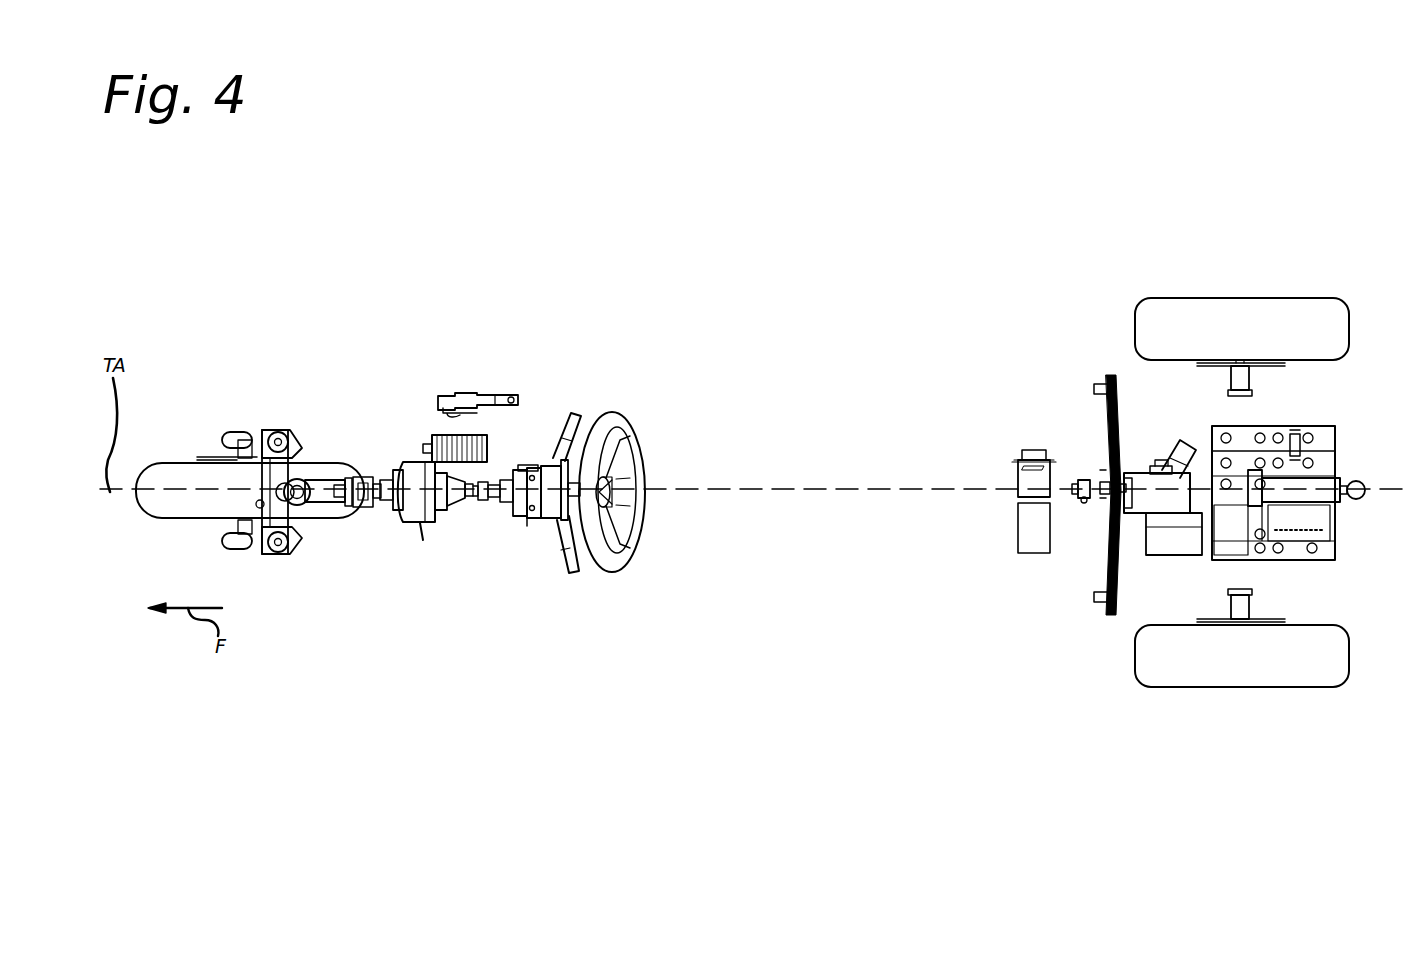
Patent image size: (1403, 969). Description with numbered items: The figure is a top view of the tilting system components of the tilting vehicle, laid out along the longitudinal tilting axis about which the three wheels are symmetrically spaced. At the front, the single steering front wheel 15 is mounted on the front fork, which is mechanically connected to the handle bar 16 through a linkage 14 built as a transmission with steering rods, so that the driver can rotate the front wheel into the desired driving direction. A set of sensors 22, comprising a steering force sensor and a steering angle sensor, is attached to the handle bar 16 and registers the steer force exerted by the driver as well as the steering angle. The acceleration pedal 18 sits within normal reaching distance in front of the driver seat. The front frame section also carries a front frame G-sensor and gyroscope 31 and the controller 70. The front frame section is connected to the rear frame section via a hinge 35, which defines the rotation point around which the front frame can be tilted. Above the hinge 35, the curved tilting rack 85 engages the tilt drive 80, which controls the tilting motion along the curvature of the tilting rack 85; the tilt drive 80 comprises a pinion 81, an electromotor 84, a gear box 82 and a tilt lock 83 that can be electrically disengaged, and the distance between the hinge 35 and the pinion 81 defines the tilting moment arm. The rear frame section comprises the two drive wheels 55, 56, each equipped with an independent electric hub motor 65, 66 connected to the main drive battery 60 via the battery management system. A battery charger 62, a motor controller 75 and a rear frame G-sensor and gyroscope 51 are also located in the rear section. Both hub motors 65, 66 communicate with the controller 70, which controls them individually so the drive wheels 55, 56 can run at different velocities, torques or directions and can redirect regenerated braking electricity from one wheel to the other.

The steering front wheel 15 is at (187, 477).
The linkage 14 is at (364, 481).
The set of sensors 22 is at (413, 480).
The acceleration pedal 18 is at (460, 435).
The handle bar 16 is at (498, 462).
The front frame G-sensor and gyroscope 31 is at (1028, 479).
The controller 70 is at (1022, 535).
The hinge 35 is at (1085, 478).
The tilt drive 80 is at (1122, 372).
The curved tilting rack 85 is at (1100, 470).
The pinion 81 is at (1106, 505).
The gear box 82 is at (1142, 474).
The electromotor 84 is at (1170, 478).
The motor controller 75 is at (1165, 553).
The main drive battery 60 is at (1258, 456).
The tilt lock 83 is at (1268, 476).
The battery charger 62 is at (1330, 490).
The rear frame G-sensor and gyroscope 51 is at (1308, 552).
The drive wheel 55 is at (1249, 308).
The electric hub motor 65 is at (1240, 392).
The drive wheel 56 is at (1297, 670).
The electric hub motor 66 is at (1245, 598).